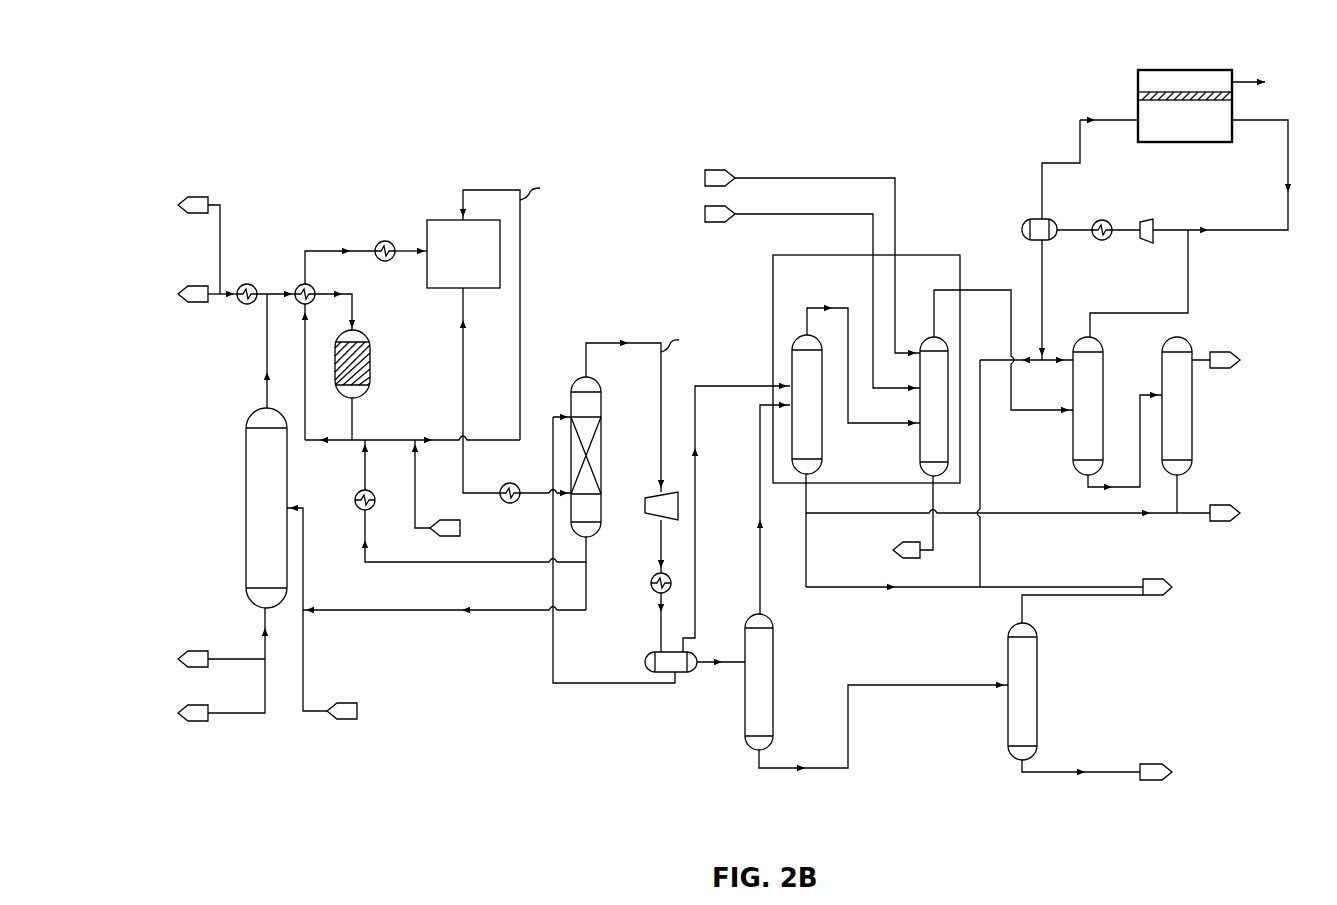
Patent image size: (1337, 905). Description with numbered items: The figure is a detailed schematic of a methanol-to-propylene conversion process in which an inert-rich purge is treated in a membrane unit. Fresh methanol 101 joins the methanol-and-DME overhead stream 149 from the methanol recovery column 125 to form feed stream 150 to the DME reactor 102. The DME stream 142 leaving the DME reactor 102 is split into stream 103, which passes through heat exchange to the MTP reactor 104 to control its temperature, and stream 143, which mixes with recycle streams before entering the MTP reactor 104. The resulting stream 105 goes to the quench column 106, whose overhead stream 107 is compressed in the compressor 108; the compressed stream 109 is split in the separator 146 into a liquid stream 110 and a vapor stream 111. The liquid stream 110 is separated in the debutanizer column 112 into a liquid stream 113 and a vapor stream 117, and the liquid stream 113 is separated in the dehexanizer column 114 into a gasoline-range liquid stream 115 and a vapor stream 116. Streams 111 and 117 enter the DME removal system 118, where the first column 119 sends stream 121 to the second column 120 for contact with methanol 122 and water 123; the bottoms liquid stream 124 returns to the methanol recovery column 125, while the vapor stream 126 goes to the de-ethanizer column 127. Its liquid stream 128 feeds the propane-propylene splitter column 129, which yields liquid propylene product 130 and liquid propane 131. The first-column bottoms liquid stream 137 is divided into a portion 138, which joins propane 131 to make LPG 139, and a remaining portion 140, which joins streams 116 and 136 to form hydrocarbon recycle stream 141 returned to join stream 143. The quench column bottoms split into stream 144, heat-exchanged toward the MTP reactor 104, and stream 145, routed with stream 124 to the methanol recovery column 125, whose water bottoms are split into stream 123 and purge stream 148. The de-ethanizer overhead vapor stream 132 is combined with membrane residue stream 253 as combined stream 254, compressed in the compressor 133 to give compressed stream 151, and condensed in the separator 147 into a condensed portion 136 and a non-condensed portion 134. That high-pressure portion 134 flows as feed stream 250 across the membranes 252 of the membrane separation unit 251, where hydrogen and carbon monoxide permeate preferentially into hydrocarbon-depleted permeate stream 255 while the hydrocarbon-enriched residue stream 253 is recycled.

The fresh methanol 101 is at (217, 294).
The dimethyl ether (DME) reactor 102 is at (370, 356).
The stream 103 is at (366, 258).
The methanol-to-propylene (MTP) reactor 104 is at (427, 232).
The resulting stream 105 is at (500, 395).
The quench column 106 is at (571, 392).
The resulting stream 107 is at (639, 407).
The compressor 108 is at (657, 493).
The compressed stream 109 is at (649, 586).
The liquid stream 110 is at (721, 654).
The vapor stream 111 is at (736, 517).
The debutanizer column 112 is at (773, 668).
The liquid stream 113 is at (883, 738).
The dehexanizer column 114 is at (1037, 716).
The liquid stream 115 is at (1097, 778).
The vapor stream 116 is at (1100, 597).
The vapor stream 117 is at (759, 508).
The DME removal system 118 is at (773, 326).
The DME removal system first column 119 is at (822, 468).
The DME removal system second column 120 is at (920, 446).
The stream 121 is at (863, 357).
The methanol 122 is at (531, 293).
The water 123 is at (531, 420).
The liquid stream 124 is at (610, 599).
The methanol recovery column 125 is at (246, 505).
The vapor stream 126 is at (1011, 295).
The de-ethanizer column 127 is at (1103, 355).
The liquid stream 128 is at (1125, 451).
The propane-propylene splitter column 129 is at (1192, 406).
The liquid propylene product 130 is at (1235, 362).
The liquid propane 131 is at (1180, 490).
The vapor stream 132 is at (1190, 308).
The compressor 133 is at (1146, 245).
The non-condensed portion 134 is at (1042, 180).
The condensed portion 136 is at (1042, 283).
The liquid stream 137 is at (808, 492).
The portion 138 is at (1008, 526).
The liquid petroleum gas (LPG) 139 is at (1244, 515).
The remaining portion 140 is at (974, 599).
The hydrocarbon recycle stream 141 is at (814, 521).
The DME stream 142 is at (353, 410).
The stream 143 is at (395, 440).
The stream 144 is at (458, 501).
The stream 145 is at (444, 622).
The separator 146 is at (683, 674).
The separator 147 is at (1022, 226).
The stream 148 is at (205, 665).
The stream 149 is at (251, 351).
The feed stream 150 is at (325, 356).
The compressed stream 151 is at (1122, 236).
The feed stream 250 is at (1080, 118).
The membrane separation unit 251 is at (1170, 142).
The membrane 252 is at (1138, 93).
The hydrocarbon-enriched residue stream 253 is at (1250, 232).
The combined stream 254 is at (1168, 230).
The hydrocarbon-depleted permeate stream 255 is at (1267, 84).